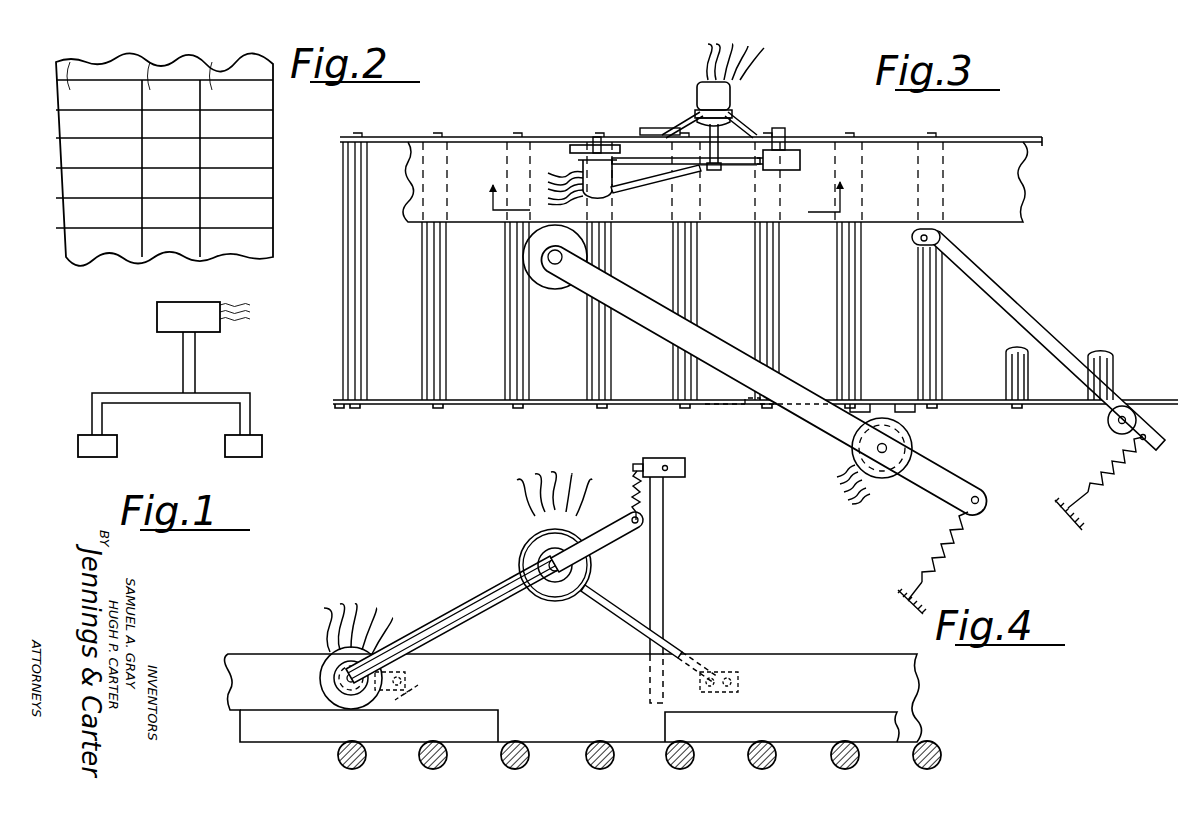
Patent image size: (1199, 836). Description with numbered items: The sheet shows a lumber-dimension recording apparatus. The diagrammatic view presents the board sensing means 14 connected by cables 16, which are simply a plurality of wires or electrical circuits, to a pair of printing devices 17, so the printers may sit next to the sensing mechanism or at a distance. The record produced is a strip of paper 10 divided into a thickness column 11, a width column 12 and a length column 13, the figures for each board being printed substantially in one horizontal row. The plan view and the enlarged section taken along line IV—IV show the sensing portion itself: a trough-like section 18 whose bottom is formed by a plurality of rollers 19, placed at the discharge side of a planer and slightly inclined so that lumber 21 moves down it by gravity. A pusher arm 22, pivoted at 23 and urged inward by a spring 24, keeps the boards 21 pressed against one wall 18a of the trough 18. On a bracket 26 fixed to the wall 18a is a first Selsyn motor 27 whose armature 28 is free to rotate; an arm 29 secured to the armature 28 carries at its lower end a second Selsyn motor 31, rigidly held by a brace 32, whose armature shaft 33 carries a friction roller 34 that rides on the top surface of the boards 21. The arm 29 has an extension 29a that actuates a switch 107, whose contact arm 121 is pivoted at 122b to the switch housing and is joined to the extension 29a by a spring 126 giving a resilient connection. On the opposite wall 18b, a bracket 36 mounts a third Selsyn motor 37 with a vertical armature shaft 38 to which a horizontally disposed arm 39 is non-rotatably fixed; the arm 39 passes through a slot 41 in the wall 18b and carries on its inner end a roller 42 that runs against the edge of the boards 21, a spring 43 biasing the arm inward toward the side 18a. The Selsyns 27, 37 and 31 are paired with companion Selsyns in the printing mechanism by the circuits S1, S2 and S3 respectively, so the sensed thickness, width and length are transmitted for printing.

In FIG. 2, the strip of paper 10 is at (275, 130).
In FIG. 2, the thickness column 11 is at (70, 62).
In FIG. 2, the width column 12 is at (212, 62).
In FIG. 2, the length column 13 is at (150, 62).
In FIG. 1, the board sensing means 14 is at (152, 327).
In FIG. 1, the cables 16 is at (198, 356).
In FIG. 1, the printing devices 17 is at (120, 446).
In FIG. 3, the trough-like section 18 is at (1000, 136).
In FIG. 4, the trough-like section 18 is at (866, 654).
In FIG. 3, the trough wall 18a is at (943, 138).
In FIG. 4, the trough wall 18a is at (774, 663).
In FIG. 3, the trough side wall 18b is at (475, 406).
In FIG. 3, the rollers 19 is at (504, 336).
In FIG. 4, the rollers 19 is at (418, 764).
In FIG. 3, the lumber 21 is at (712, 224).
In FIG. 4, the lumber 21 is at (456, 710).
In FIG. 3, the pusher arm 22 is at (1020, 304).
In FIG. 3, the pivot 23 is at (1110, 428).
In FIG. 3, the spring 24 is at (1108, 472).
In FIG. 3, the bracket 26 is at (676, 128).
In FIG. 4, the bracket 26 is at (638, 617).
In FIG. 3, the first Selsyn motor 27 is at (732, 98).
In FIG. 4, the first Selsyn motor 27 is at (576, 592).
In FIG. 3, the armature 28 is at (722, 148).
In FIG. 4, the armature 28 is at (554, 568).
In FIG. 3, the arm 29 is at (652, 170).
In FIG. 4, the arm 29 is at (478, 596).
In FIG. 3, the arm extension 29a is at (741, 166).
In FIG. 4, the arm extension 29a is at (645, 534).
In FIG. 3, the second Selsyn motor 31 is at (597, 179).
In FIG. 4, the second Selsyn motor 31 is at (334, 676).
In FIG. 3, the brace 32 is at (633, 196).
In FIG. 4, the brace 32 is at (408, 646).
In FIG. 3, the armature shaft 33 is at (597, 136).
In FIG. 3, the friction roller 34 is at (578, 144).
In FIG. 4, the friction roller 34 is at (322, 690).
In FIG. 3, the bracket 36 is at (878, 416).
In FIG. 3, the third Selsyn motor 37 is at (912, 448).
In FIG. 3, the armature shaft 38 is at (908, 446).
In FIG. 3, the horizontally disposed arm 39 is at (800, 372).
In FIG. 3, the slot 41 is at (738, 406).
In FIG. 3, the roller 42 is at (555, 288).
In FIG. 3, the spring 43 is at (954, 546).
In FIG. 3, the switch 107 is at (788, 170).
In FIG. 4, the switch 107 is at (690, 440).
In FIG. 4, the contact arm 121 is at (633, 466).
In FIG. 4, the pivot 122b is at (689, 468).
In FIG. 4, the spring 126 is at (632, 488).
In FIG. 3, the circuits S1 is at (760, 50).
In FIG. 3, the circuits S2 is at (869, 492).
In FIG. 3, the circuits S3 is at (548, 190).
In FIG. 4, the circuits S3 is at (317, 616).
In FIG. 3, the section line IV is at (663, 184).